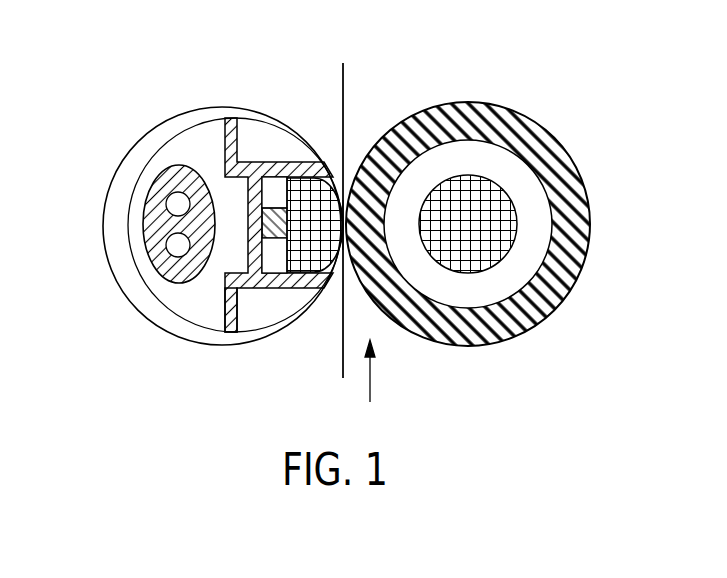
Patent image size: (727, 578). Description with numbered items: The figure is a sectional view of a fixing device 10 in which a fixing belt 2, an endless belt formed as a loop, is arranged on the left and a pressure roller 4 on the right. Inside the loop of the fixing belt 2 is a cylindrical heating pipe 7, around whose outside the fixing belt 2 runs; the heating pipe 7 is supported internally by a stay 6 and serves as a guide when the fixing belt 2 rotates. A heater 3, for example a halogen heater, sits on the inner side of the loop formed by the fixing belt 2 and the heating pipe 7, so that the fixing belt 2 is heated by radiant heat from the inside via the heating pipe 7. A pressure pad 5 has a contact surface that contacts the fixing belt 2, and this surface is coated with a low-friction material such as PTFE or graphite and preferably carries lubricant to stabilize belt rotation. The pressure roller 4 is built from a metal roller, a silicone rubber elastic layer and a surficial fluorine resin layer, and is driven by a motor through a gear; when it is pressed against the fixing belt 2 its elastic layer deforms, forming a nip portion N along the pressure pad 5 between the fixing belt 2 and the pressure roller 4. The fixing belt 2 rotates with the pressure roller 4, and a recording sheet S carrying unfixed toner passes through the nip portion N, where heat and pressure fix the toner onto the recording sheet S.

The fixing belt 2 is at (165, 118).
The heater 3 is at (148, 252).
The pressure roller 4 is at (568, 147).
The pressure pad 5 is at (344, 268).
The stay 6 is at (238, 312).
The heating pipe 7 is at (209, 119).
The fixing device 10 is at (533, 93).
The nip portion N is at (353, 140).
The recording sheet S is at (343, 358).